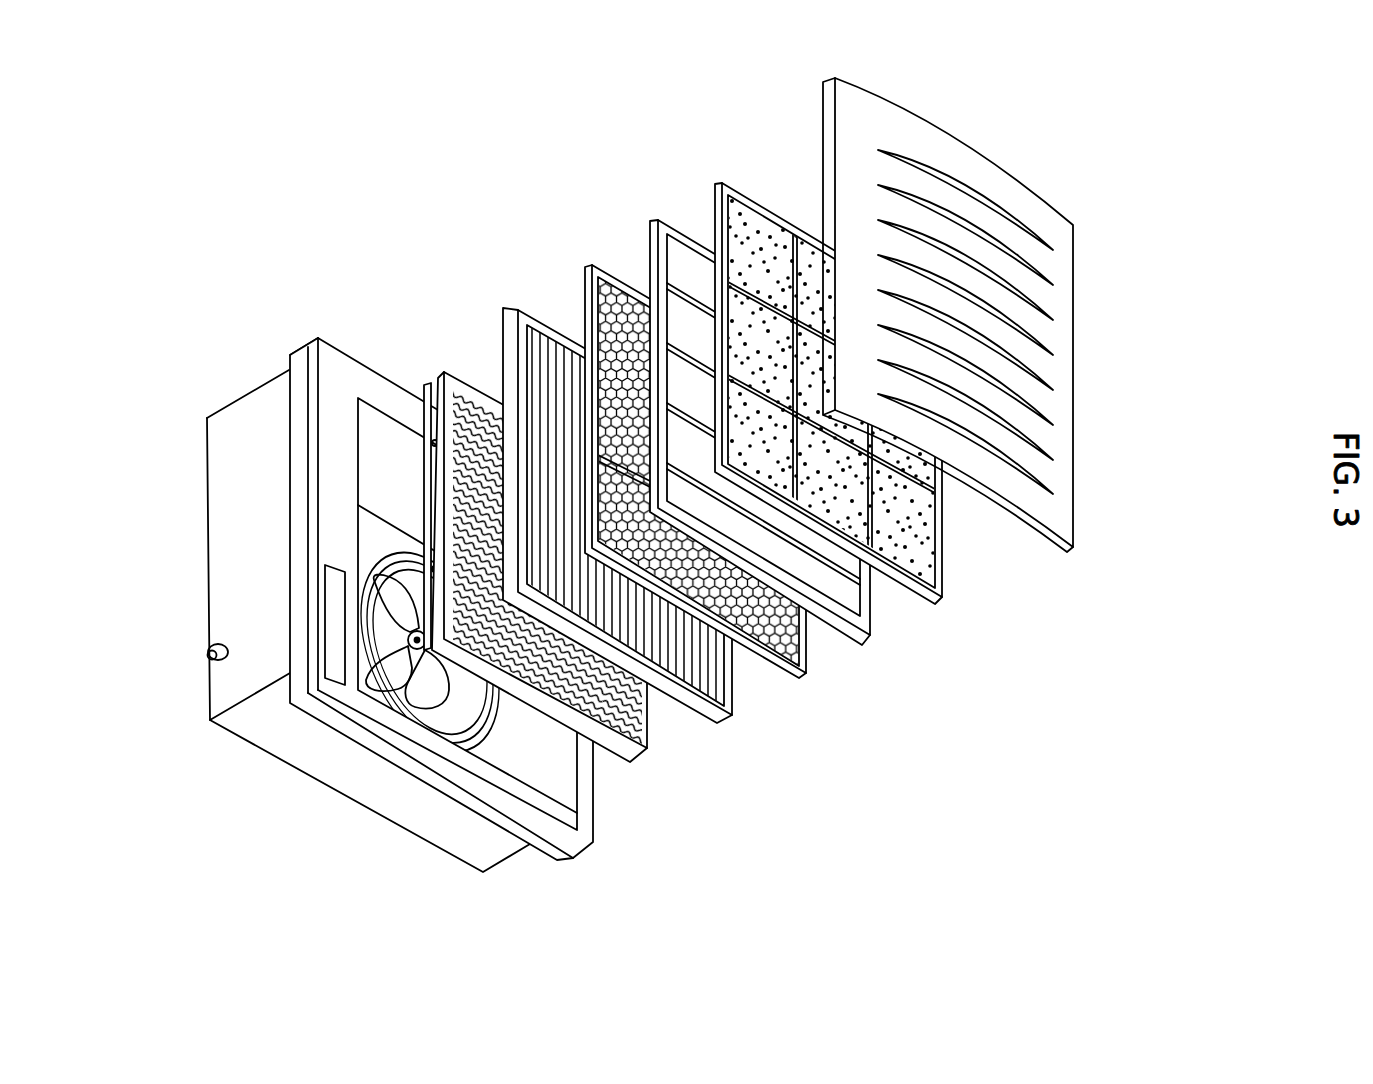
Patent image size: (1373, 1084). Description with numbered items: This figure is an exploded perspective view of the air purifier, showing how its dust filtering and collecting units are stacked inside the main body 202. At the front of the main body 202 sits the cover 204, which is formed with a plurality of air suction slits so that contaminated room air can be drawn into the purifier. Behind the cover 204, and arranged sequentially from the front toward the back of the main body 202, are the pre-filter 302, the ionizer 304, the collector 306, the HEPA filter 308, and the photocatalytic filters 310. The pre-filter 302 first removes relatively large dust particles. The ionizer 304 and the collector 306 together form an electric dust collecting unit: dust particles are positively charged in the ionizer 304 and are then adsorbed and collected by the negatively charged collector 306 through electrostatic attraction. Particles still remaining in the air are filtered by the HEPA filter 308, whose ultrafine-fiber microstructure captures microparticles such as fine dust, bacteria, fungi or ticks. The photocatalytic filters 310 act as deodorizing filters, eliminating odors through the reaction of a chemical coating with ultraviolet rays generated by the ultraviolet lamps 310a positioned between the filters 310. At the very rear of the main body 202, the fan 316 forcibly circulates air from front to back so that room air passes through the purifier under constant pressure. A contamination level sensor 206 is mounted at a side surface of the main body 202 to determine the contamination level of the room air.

The main body 202 is at (346, 615).
The cover 204 is at (1069, 417).
The contamination level sensor 206 is at (209, 660).
The pre-filter 302 is at (955, 601).
The ionizer 304 is at (873, 636).
The collector 306 is at (804, 680).
The HEPA filter 308 is at (724, 722).
The photocatalytic filters 310 is at (436, 360).
The ultraviolet lamps 310a is at (436, 442).
The fan 316 is at (417, 697).